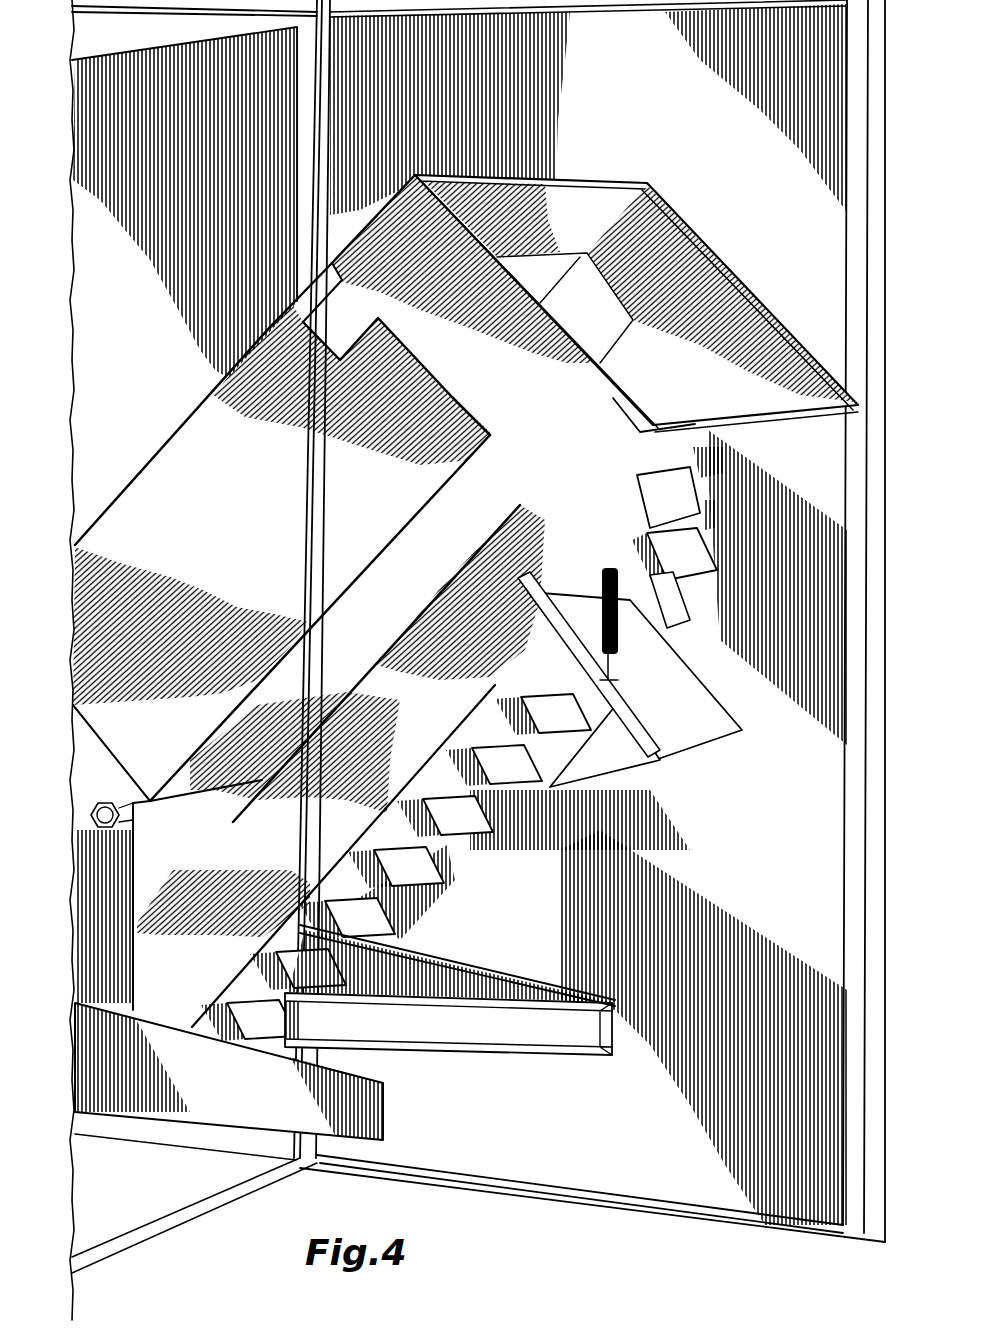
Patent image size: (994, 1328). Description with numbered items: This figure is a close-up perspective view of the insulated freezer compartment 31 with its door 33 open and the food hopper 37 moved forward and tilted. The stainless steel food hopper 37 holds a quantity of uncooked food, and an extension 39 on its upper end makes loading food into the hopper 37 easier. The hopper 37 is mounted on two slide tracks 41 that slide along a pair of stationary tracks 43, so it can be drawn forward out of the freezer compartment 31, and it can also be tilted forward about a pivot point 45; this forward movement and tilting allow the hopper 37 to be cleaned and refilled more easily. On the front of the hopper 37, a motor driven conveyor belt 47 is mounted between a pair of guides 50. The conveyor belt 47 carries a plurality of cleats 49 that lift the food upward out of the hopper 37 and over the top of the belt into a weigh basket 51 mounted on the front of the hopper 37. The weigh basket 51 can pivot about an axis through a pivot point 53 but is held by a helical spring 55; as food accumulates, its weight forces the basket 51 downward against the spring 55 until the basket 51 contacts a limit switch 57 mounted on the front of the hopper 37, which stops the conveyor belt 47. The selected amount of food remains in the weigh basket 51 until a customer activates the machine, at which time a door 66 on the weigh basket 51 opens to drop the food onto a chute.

The freezer compartment 31 is at (113, 270).
The door 33 is at (818, 240).
The food hopper 37 is at (170, 460).
The extension 39 is at (790, 375).
The slide tracks 41 is at (478, 968).
The stationary tracks 43 is at (375, 1035).
The pivot point 45 is at (100, 818).
The conveyor belt 47 is at (680, 487).
The cleats 49 is at (703, 553).
The guides 50 is at (172, 893).
The weigh basket 51 is at (705, 705).
The pivot point 53 is at (522, 592).
The helical spring 55 is at (589, 586).
The limit switch 57 is at (530, 645).
The door 66 is at (635, 765).